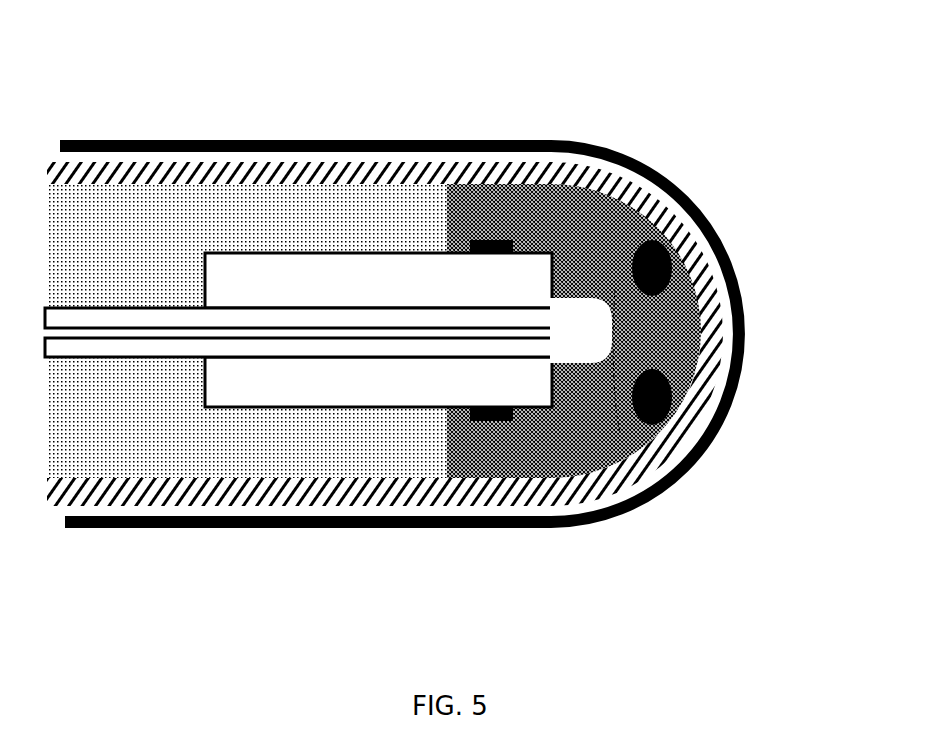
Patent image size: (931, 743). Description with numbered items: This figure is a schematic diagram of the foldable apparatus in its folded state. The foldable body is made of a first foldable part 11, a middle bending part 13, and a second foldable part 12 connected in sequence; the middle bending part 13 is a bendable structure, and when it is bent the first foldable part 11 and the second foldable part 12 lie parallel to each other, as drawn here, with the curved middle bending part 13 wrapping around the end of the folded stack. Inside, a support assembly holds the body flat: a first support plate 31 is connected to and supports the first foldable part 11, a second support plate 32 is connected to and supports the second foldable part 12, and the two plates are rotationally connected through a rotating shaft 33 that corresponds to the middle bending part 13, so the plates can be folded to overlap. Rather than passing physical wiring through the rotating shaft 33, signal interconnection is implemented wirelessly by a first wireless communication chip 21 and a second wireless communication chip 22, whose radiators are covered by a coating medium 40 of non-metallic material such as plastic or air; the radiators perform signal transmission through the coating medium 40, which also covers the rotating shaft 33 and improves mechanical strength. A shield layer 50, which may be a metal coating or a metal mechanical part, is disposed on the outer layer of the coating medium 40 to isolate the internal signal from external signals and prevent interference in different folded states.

The first foldable part 11 is at (250, 140).
The second foldable part 12 is at (163, 528).
The middle bending part 13 is at (738, 416).
The first wireless communication chip 21 is at (485, 176).
The second wireless communication chip 22 is at (492, 498).
The first support plate 31 is at (343, 285).
The second support plate 32 is at (283, 385).
The rotating shaft 33 is at (733, 290).
The coating medium 40 is at (573, 513).
The shield layer 50 is at (423, 166).